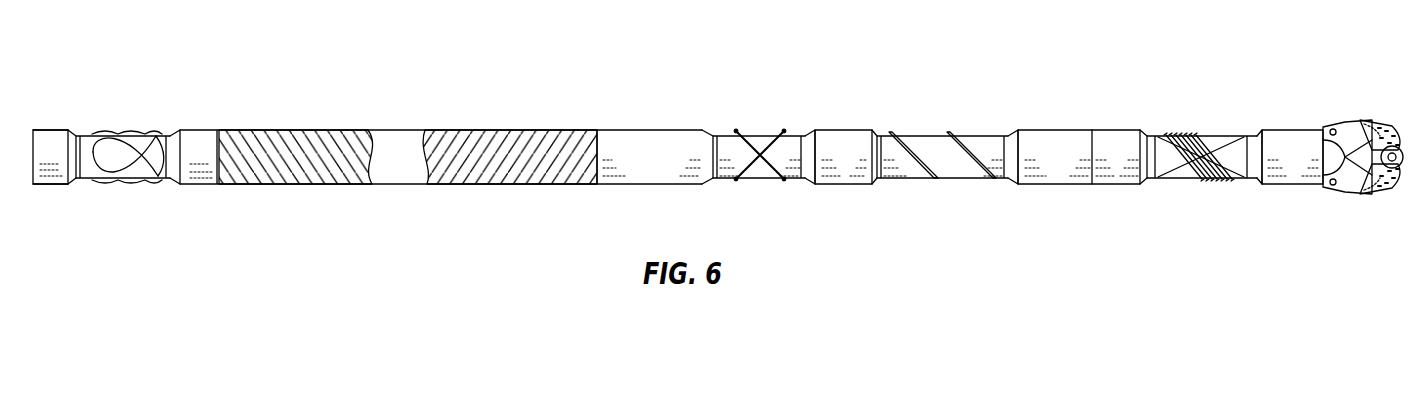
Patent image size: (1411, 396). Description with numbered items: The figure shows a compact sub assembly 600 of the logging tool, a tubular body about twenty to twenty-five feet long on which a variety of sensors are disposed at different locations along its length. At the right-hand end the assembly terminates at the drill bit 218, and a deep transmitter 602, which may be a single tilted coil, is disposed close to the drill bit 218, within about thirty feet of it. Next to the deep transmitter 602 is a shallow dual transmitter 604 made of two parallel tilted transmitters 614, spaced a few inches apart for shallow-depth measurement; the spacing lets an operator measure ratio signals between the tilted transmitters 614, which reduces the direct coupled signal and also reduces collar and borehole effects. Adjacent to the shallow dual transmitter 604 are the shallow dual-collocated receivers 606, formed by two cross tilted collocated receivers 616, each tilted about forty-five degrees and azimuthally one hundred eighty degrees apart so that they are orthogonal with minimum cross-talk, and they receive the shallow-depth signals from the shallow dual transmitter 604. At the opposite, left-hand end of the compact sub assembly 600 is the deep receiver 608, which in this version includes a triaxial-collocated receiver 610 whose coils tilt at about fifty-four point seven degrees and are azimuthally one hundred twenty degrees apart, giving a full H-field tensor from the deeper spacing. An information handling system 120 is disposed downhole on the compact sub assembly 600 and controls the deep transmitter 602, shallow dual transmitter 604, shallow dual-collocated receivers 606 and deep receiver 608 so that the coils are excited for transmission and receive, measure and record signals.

The compact sub assembly 600 is at (122, 50).
The deep receiver 608 is at (150, 110).
The triaxial-collocated receiver 610 is at (136, 182).
The information handling system 120 is at (296, 128).
The shallow dual-collocated receivers 606 is at (723, 112).
The collocated receiver 616 is at (783, 181).
The shallow dual transmitter 604 is at (930, 112).
The tilted transmitter 614 is at (997, 181).
The deep transmitter 602 is at (1183, 133).
The drill bit 218 is at (1356, 124).